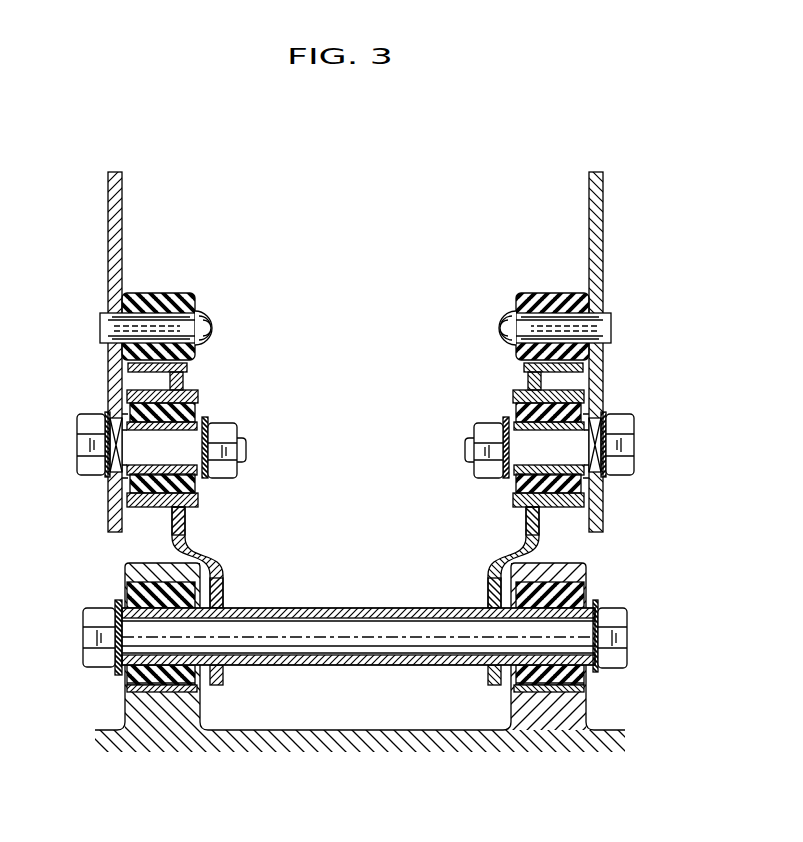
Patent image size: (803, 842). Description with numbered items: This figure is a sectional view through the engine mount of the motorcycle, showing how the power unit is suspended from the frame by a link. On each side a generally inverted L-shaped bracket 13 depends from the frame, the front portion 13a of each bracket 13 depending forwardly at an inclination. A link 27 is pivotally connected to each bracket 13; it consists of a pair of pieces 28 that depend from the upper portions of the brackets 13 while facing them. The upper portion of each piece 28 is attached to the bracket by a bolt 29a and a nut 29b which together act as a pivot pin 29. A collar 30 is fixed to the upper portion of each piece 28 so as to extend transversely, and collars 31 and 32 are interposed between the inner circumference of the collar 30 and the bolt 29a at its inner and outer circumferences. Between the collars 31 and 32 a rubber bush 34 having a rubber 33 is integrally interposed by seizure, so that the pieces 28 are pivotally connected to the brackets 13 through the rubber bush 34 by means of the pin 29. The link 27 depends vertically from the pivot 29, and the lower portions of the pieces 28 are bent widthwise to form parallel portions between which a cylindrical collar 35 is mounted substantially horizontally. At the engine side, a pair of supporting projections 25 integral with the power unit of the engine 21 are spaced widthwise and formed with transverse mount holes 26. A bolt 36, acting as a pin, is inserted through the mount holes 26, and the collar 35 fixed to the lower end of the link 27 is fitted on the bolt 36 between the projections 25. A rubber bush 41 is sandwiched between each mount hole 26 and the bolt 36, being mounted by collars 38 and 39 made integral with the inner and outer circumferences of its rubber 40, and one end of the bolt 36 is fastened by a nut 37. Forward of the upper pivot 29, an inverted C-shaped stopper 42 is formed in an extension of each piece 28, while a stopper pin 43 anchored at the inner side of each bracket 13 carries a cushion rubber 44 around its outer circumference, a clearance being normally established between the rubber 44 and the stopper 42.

The bracket 13 is at (108, 266).
The front portion of bracket 13a is at (186, 376).
The engine 21 is at (405, 730).
The supporting projection 25 is at (150, 712).
The mount hole 26 is at (135, 596).
The link 27 is at (196, 532).
The piece of link 28 is at (172, 522).
The pivot pin 29 is at (166, 448).
The bolt 29a is at (130, 448).
The nut 29b is at (240, 455).
The collar 30 is at (192, 503).
The collar 31 is at (200, 410).
The collar 32 is at (200, 398).
The rubber 33 is at (185, 485).
The rubber bush 34 is at (140, 415).
The cylindrical collar 35 is at (330, 608).
The bolt 36 is at (395, 652).
The nut 37 is at (100, 640).
The collar 38 is at (216, 615).
The collar 39 is at (212, 588).
The rubber 40 is at (200, 688).
The rubber bush 41 is at (130, 680).
The stopper 42 is at (208, 355).
The stopper pin 43 is at (198, 325).
The cushion rubber 44 is at (170, 300).